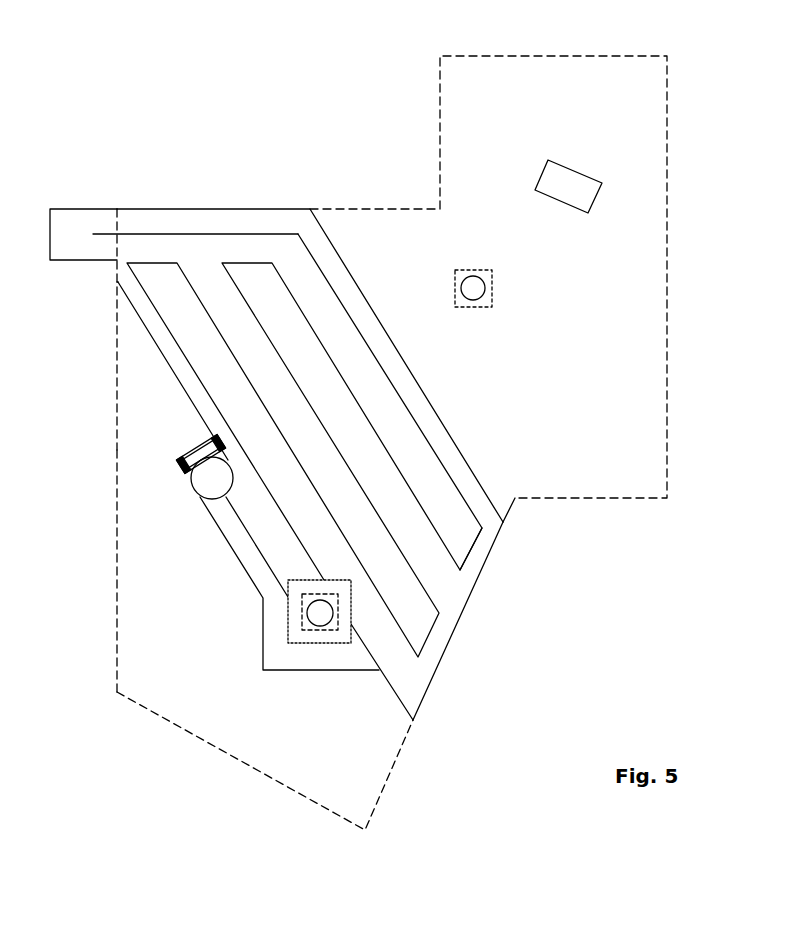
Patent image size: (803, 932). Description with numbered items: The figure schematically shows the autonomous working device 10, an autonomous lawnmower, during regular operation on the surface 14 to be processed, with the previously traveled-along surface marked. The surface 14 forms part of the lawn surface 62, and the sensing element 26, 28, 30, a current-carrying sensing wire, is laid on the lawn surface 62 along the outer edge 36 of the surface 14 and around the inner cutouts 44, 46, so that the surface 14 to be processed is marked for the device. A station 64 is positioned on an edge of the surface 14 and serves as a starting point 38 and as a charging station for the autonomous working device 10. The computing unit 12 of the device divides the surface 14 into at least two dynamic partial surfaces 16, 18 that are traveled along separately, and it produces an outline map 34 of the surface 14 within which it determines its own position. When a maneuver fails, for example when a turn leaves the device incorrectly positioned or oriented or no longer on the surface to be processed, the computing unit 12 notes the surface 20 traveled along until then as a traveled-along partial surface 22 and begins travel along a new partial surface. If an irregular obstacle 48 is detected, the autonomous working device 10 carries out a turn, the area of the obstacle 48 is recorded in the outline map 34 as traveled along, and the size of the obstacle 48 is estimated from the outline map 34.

The autonomous working device 10 is at (193, 497).
The computing unit 12 is at (200, 448).
The surface to be processed 14 is at (167, 665).
The dynamic partial surface 16 is at (158, 380).
The dynamic partial surface 18 is at (508, 118).
The surface traveled along 20 is at (200, 255).
The traveled-along partial surface 22 is at (447, 587).
The sensing element 26 is at (117, 487).
The sensing element 28 is at (308, 635).
The sensing element 30 is at (487, 310).
The outline map 34 is at (447, 663).
The outer edge 36 is at (117, 652).
The starting point 38 is at (101, 232).
The inner cutout 44 is at (323, 617).
The inner cutout 46 is at (478, 288).
The irregular obstacle 48 is at (587, 193).
The lawn surface 62 is at (538, 560).
The station 64 is at (52, 262).